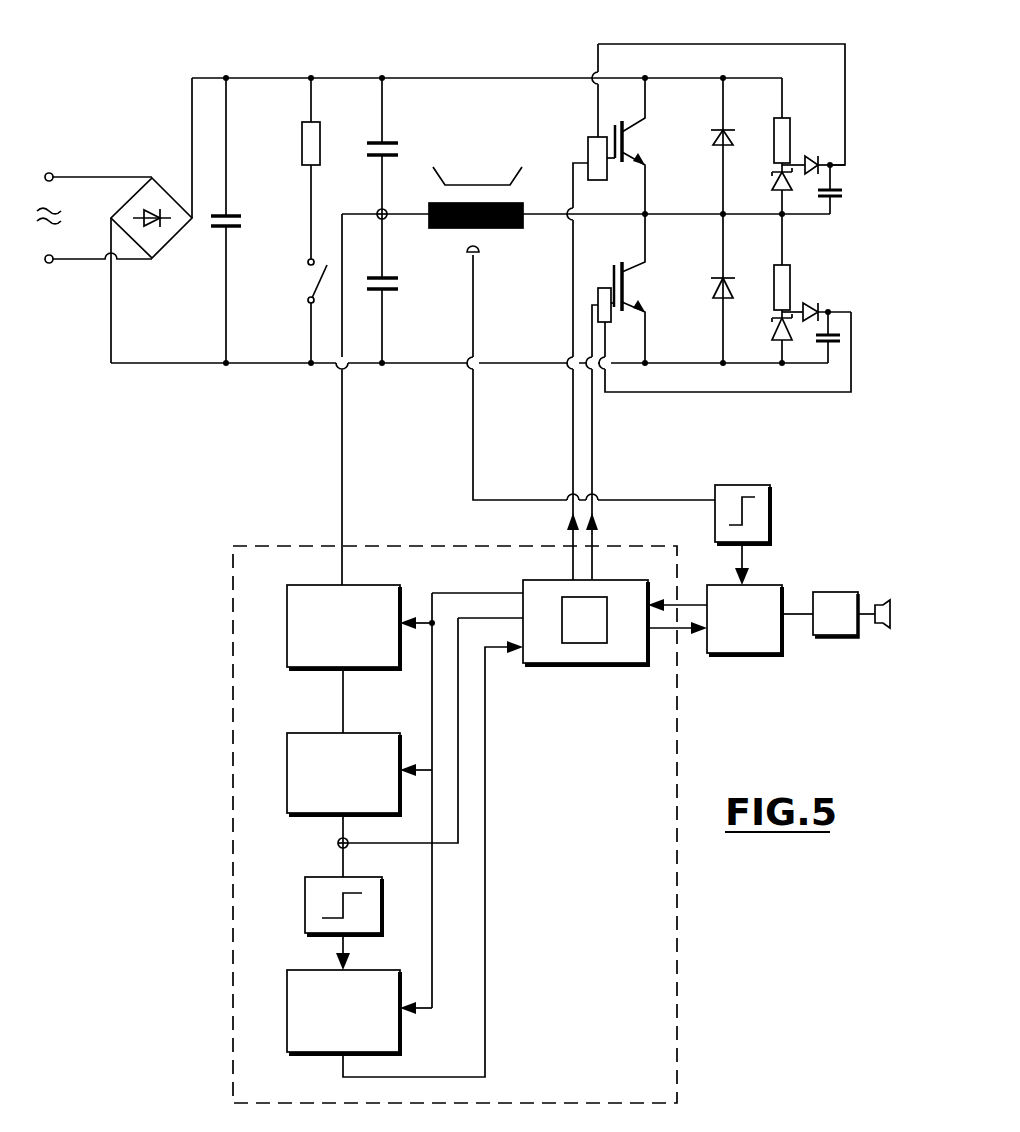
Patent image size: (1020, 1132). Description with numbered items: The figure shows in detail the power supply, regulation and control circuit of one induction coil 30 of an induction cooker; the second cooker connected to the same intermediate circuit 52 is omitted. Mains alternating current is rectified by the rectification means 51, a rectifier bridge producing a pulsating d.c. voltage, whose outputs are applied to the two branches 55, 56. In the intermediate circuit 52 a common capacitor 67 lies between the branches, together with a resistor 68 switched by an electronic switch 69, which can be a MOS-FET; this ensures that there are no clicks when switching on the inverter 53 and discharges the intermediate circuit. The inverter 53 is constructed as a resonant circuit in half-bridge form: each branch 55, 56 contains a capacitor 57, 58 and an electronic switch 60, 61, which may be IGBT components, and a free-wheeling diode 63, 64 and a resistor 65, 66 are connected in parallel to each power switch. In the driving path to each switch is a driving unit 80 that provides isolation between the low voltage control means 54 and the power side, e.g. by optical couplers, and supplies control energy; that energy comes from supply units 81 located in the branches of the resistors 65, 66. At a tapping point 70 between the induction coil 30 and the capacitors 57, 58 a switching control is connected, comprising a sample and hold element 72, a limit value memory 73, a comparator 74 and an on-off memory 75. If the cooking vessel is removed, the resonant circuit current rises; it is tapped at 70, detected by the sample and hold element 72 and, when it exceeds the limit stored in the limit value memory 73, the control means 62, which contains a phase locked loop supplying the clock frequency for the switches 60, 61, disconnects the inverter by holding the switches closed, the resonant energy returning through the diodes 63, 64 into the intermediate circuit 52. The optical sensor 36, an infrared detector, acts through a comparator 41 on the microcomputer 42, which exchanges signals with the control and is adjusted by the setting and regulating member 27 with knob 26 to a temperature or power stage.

The knob 26 is at (885, 630).
The setting and regulating member 27 is at (834, 591).
The induction coil 30 is at (508, 230).
The optical sensor 36 is at (478, 258).
The comparator 41 is at (772, 512).
The microcomputer 42 is at (743, 656).
The rectification means 51 is at (150, 142).
The intermediate circuit 52 is at (318, 62).
The inverter 53 is at (655, 62).
The control means 54 is at (680, 970).
The first branch 55 is at (512, 77).
The second branch 56 is at (522, 362).
The capacitor 57 is at (388, 142).
The capacitor 58 is at (391, 291).
The electronic switch 60 is at (637, 148).
The electronic switch 61 is at (637, 291).
The control means 62 is at (580, 660).
The free-wheeling diode 63 is at (717, 150).
The free-wheeling diode 64 is at (717, 291).
The resistor 65 is at (792, 141).
The resistor 66 is at (792, 290).
The common capacitor 67 is at (232, 214).
The resistor 68 is at (302, 138).
The electronic switch 69 is at (306, 281).
The tapping point 70 is at (377, 212).
The sample and hold element 72 is at (287, 625).
The limit value memory 73 is at (287, 771).
The comparator 74 is at (305, 909).
The on-off memory 75 is at (287, 1010).
The driving unit 80 is at (588, 151).
The supply unit 81 is at (860, 158).